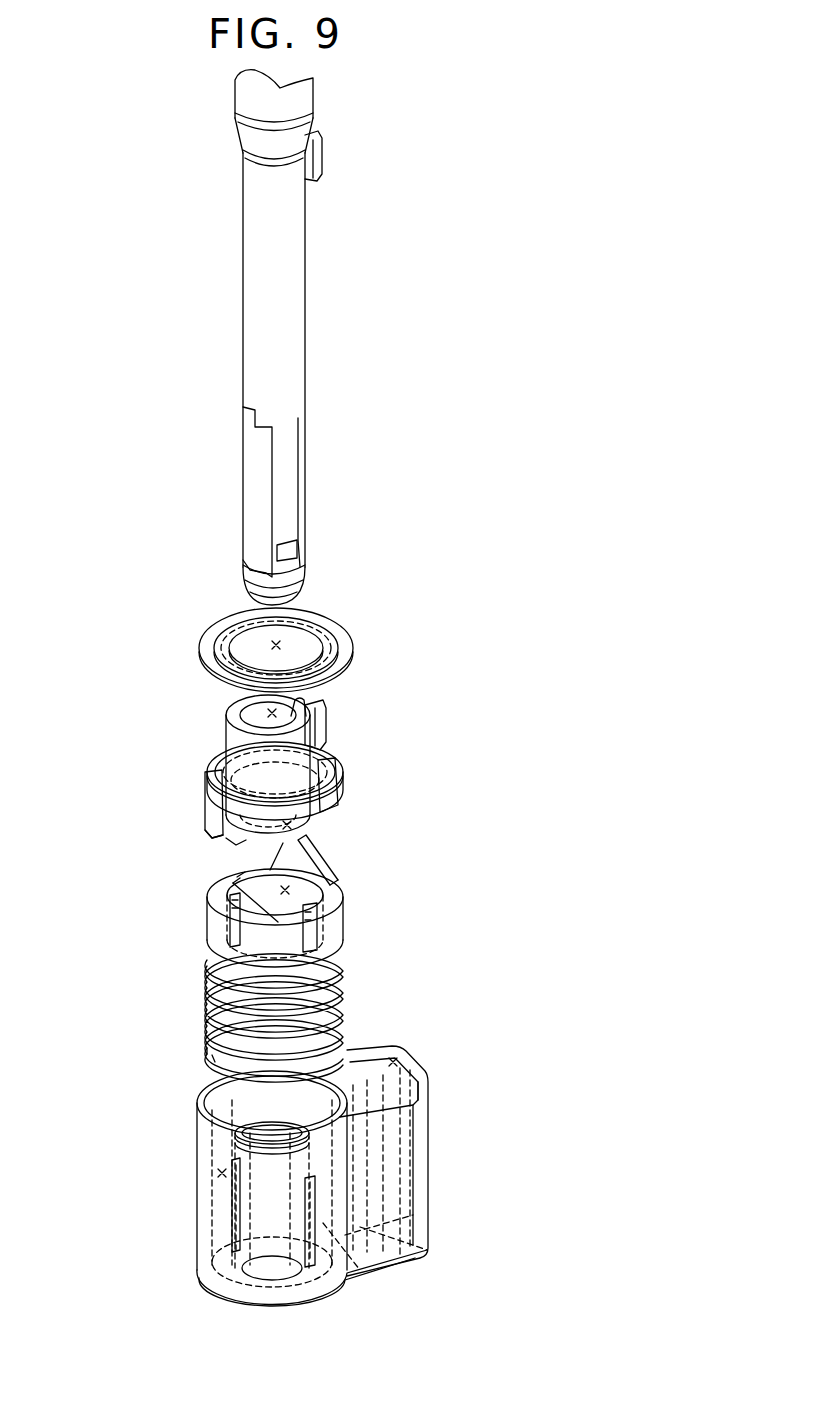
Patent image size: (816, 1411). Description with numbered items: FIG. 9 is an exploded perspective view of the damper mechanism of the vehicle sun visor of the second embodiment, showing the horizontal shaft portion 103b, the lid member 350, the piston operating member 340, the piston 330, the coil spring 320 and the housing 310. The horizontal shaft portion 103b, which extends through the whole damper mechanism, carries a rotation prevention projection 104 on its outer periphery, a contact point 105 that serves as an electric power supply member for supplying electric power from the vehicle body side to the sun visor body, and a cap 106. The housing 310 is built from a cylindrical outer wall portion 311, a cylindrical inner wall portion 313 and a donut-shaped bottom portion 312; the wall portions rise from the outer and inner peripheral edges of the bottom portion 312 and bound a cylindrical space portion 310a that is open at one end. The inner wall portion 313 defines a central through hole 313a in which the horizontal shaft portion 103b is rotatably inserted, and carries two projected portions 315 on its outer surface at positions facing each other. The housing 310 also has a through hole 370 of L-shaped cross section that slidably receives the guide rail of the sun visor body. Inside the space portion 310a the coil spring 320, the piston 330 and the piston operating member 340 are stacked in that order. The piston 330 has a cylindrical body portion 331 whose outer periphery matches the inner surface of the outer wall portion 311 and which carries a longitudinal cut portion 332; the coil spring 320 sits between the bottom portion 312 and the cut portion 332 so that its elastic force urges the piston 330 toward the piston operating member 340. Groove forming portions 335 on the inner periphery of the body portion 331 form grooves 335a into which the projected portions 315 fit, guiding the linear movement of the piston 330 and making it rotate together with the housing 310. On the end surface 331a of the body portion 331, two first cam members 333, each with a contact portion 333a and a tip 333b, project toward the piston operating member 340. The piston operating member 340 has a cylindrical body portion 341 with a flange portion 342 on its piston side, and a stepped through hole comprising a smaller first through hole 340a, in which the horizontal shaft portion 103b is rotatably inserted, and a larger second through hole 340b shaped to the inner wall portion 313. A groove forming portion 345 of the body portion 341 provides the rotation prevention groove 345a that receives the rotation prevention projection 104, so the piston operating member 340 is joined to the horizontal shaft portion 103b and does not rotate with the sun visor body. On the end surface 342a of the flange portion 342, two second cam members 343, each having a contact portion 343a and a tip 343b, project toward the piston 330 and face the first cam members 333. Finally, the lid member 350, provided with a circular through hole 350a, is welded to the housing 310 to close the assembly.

The horizontal shaft portion 103b is at (275, 310).
The rotation prevention projection 104 is at (322, 157).
The contact point 105 is at (256, 470).
The cap 106 is at (300, 592).
The lid member 350 is at (158, 628).
The circular through hole 350a is at (282, 645).
The piston operating member 340 is at (110, 735).
The first through hole 340a is at (265, 712).
The second through hole 340b is at (295, 825).
The cylindrical body portion 341 is at (228, 737).
The flange portion 342 is at (215, 761).
The end surface 342a is at (215, 786).
The second cam members 343 is at (210, 811).
The contact portion 343a is at (237, 852).
The tip 343b is at (207, 836).
The projection 345 is at (326, 722).
The rotation prevention groove 345a is at (306, 703).
The piston 330 is at (103, 885).
The cylindrical body portion 331 is at (317, 925).
The end surface 331a is at (343, 902).
The cut portion 332 is at (237, 942).
The first cam members 333 is at (233, 913).
The contact portion 333a is at (217, 902).
The tip 333b is at (237, 878).
The groove forming portions 335 is at (220, 897).
The grooves 335a is at (243, 878).
The coil spring 320 is at (377, 1000).
The housing 310 is at (129, 1113).
The space portion 310a is at (216, 1173).
The cylindrical outer wall portion 311 is at (200, 1225).
The donut-shaped bottom portion 312 is at (227, 1272).
The cylindrical inner wall portion 313 is at (237, 1155).
The through hole 313a is at (260, 1137).
The projected portions 315 is at (233, 1197).
The through hole 370 is at (397, 1062).